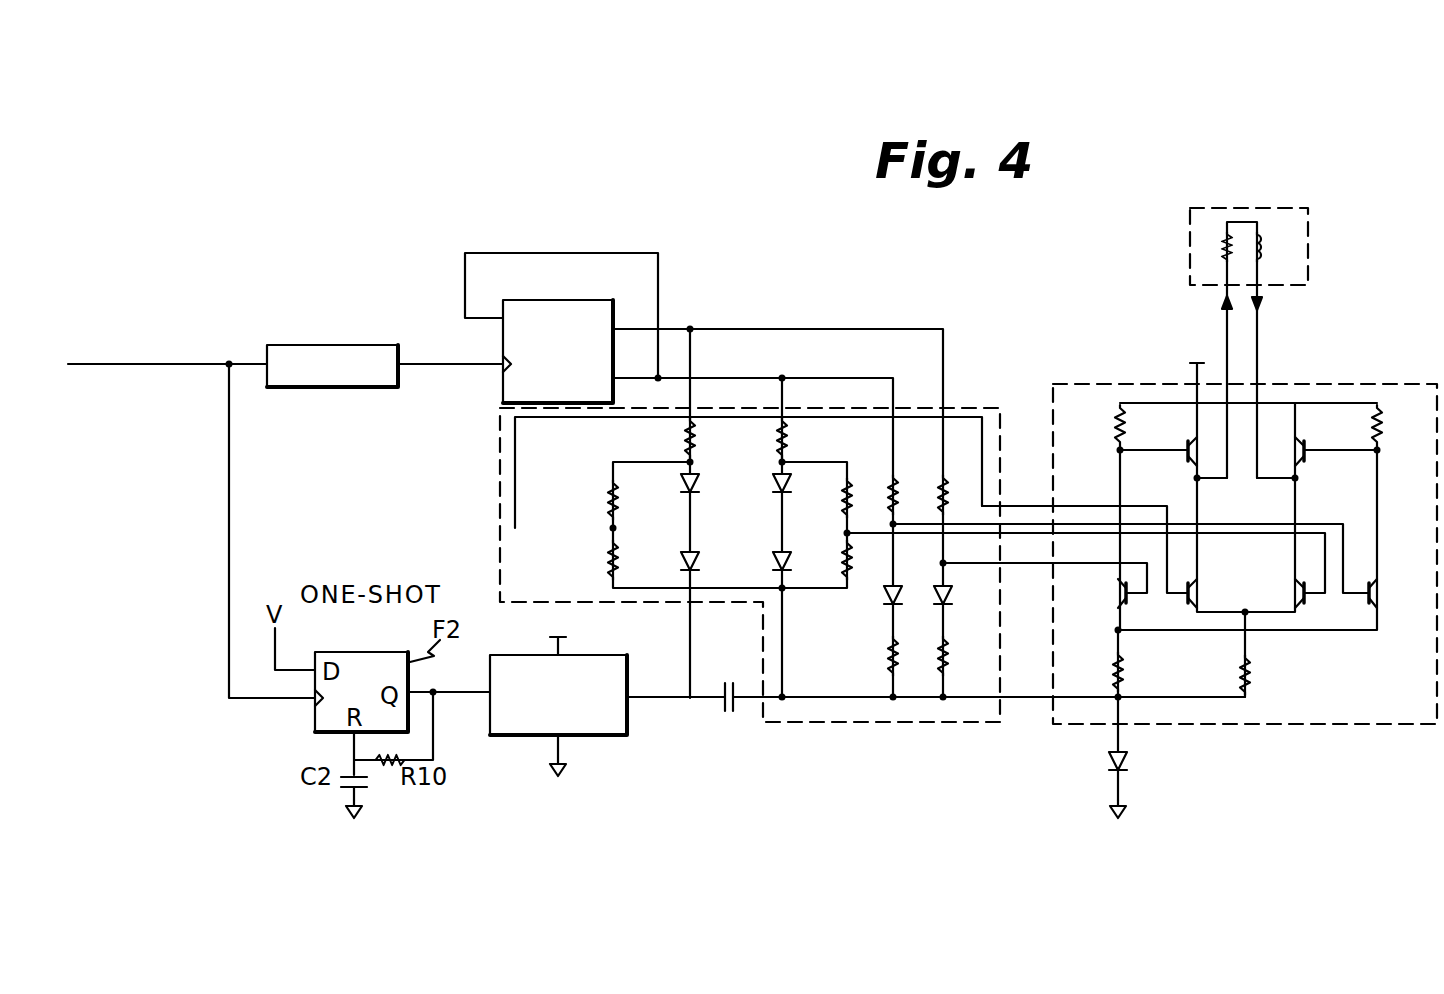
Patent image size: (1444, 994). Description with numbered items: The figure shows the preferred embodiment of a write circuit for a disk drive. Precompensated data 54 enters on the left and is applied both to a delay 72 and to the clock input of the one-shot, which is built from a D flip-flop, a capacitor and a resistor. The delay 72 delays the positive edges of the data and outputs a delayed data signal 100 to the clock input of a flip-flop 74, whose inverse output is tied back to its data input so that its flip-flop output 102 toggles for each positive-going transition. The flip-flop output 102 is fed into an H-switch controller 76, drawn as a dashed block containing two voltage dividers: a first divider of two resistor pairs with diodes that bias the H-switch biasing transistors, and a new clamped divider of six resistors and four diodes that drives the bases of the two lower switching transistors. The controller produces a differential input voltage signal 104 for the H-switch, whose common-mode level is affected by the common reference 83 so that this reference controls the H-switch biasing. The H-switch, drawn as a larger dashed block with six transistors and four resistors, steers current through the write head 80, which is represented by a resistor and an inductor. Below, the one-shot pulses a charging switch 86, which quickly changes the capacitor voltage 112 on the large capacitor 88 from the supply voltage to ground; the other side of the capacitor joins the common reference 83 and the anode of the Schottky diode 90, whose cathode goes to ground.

The precompensated data 54 is at (191, 505).
The delay 72 is at (318, 344).
The flip-flop 74 is at (536, 300).
The H-switch controller 76 is at (500, 528).
The write head 80 is at (1190, 232).
The common reference 83 is at (1055, 700).
The charging switch 86 is at (515, 737).
The large capacitor 88 is at (740, 705).
The diode 90 is at (1128, 762).
The delayed data signal 100 is at (430, 362).
The flip-flop output 102 is at (757, 328).
The differential input voltage signal 104 is at (1020, 506).
The capacitor voltage 112 is at (675, 698).